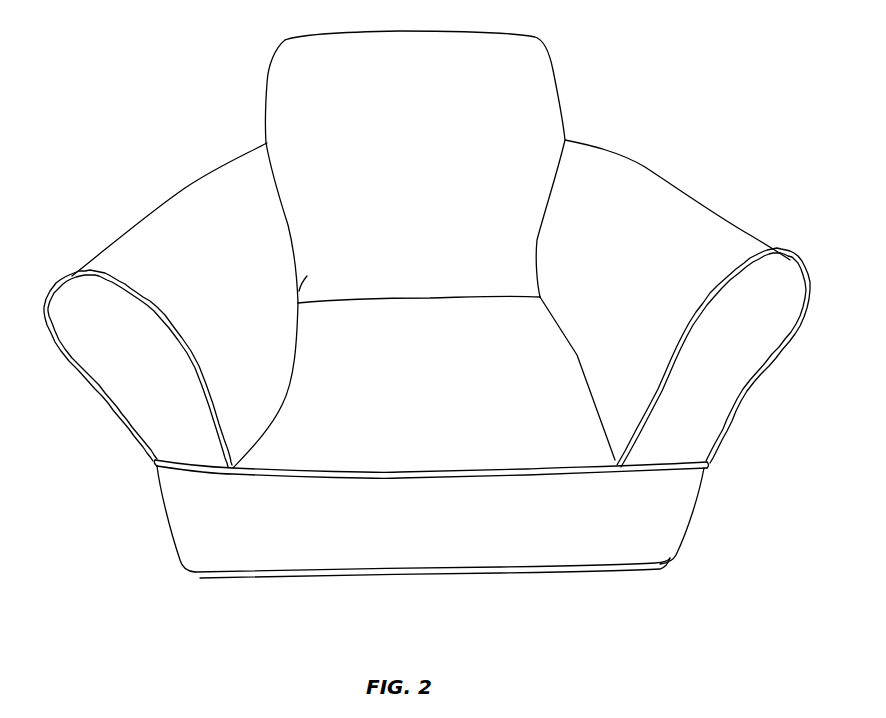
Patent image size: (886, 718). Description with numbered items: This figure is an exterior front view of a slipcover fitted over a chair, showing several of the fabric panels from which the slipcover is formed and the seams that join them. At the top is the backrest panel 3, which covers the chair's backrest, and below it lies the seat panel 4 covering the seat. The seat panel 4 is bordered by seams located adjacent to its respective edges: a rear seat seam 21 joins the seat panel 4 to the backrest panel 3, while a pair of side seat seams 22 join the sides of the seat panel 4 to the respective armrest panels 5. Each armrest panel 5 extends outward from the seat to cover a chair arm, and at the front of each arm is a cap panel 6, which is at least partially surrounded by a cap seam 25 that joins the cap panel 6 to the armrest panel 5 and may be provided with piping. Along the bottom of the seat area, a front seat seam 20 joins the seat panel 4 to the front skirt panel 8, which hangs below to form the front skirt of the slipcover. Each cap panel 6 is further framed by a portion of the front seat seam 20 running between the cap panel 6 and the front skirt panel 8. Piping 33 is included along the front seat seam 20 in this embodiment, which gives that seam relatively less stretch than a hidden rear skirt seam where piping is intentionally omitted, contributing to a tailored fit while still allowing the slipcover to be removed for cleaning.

The backrest panel 3 is at (345, 83).
The seat panel 4 is at (357, 338).
The rear seat seam 21 is at (428, 297).
The side seat seams 22 is at (577, 355).
The armrest panel 5 is at (725, 238).
The cap panel 6 is at (707, 397).
The cap seam 25 is at (113, 278).
The front seat seam 20 is at (233, 475).
The piping 33 is at (527, 471).
The front skirt panel 8 is at (628, 518).